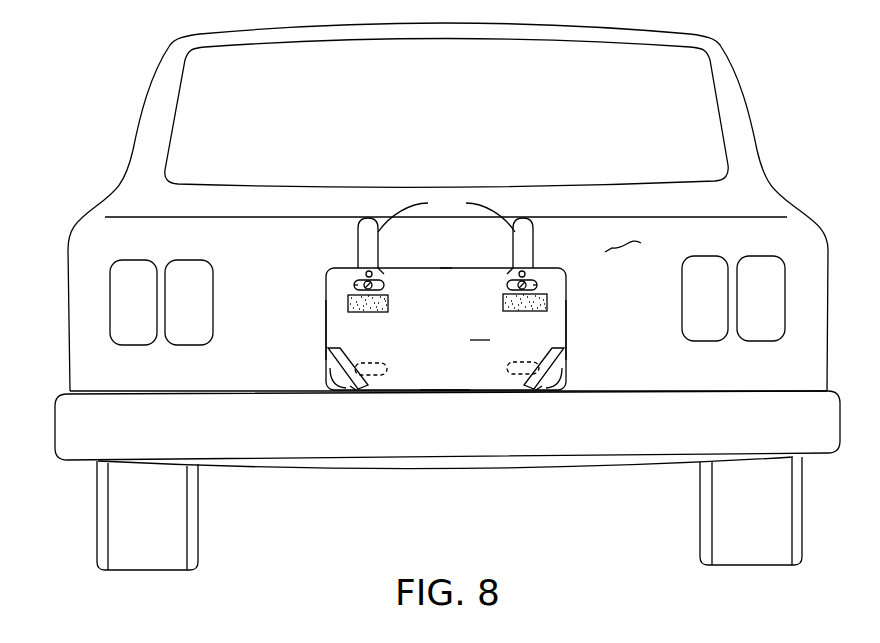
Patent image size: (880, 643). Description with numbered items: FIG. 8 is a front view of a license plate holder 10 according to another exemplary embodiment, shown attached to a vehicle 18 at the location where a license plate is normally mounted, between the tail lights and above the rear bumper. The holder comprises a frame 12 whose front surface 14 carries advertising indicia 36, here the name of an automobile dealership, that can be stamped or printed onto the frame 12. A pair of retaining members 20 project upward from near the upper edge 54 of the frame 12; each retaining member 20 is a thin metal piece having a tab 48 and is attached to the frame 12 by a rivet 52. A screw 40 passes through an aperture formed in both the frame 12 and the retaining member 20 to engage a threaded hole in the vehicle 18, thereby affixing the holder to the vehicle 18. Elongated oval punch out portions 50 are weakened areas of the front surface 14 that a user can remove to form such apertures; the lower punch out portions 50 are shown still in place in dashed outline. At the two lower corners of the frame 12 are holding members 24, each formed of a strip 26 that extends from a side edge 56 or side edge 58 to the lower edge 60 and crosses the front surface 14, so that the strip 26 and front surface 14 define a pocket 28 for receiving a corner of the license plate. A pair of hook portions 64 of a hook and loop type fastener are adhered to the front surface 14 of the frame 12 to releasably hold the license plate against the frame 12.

The license plate holder 10 is at (603, 253).
The frame 12 is at (332, 296).
The front surface 14 is at (418, 360).
The vehicle 18 is at (99, 242).
The retaining member 20 is at (367, 250).
The holding member 24 is at (328, 380).
The strip 26 is at (352, 390).
The pocket 28 is at (345, 364).
The advertising indicia 36 is at (480, 339).
The screw 40 is at (366, 279).
The tab 48 is at (446, 212).
The punch out portion 50 is at (355, 283).
The rivet 52 is at (383, 272).
The upper edge 54 is at (445, 265).
The side edge 56 is at (326, 325).
The side edge 58 is at (569, 322).
The lower edge 60 is at (441, 389).
The hook portion 64 is at (348, 305).